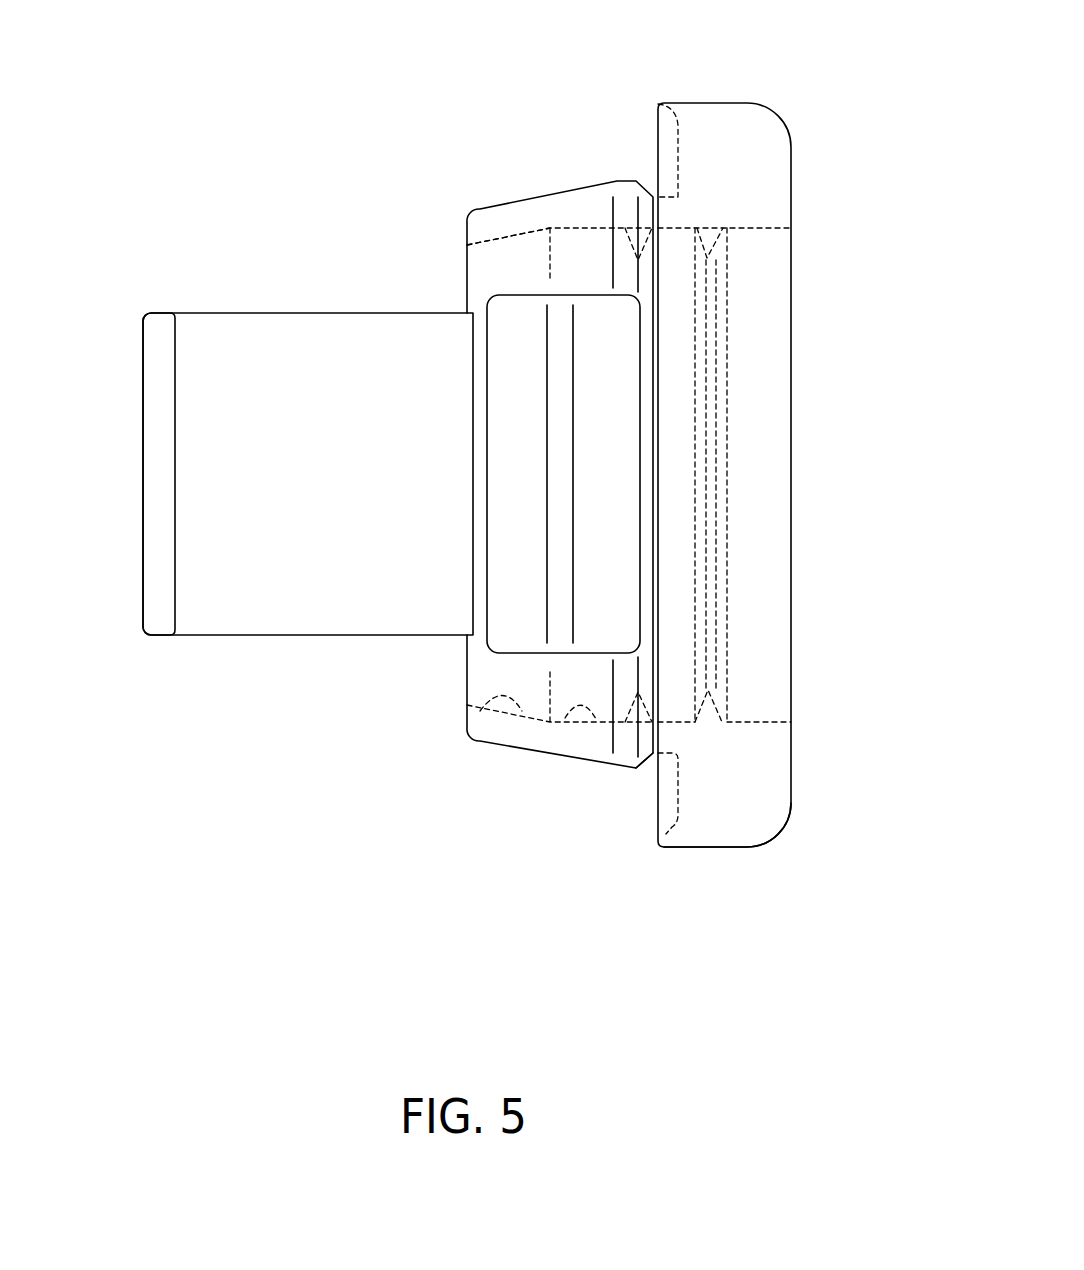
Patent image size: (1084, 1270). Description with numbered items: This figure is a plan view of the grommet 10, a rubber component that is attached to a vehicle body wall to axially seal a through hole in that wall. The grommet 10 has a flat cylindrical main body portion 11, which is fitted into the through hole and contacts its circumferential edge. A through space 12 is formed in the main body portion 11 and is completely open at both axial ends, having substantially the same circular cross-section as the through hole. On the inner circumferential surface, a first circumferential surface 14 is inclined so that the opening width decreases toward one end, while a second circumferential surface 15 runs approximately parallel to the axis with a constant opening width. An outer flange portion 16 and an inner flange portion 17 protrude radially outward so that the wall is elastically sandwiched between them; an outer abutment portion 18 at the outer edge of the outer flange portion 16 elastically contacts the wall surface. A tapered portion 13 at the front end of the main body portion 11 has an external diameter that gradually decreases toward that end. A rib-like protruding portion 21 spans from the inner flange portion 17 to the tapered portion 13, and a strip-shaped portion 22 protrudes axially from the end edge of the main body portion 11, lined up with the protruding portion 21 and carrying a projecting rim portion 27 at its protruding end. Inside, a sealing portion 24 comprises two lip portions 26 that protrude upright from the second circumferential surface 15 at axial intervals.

The grommet 10 is at (329, 133).
The main body portion 11 is at (577, 248).
The through space 12 is at (760, 362).
The tapered portion 13 is at (517, 243).
The first circumferential surface 14 is at (480, 711).
The second circumferential surface 15 is at (565, 718).
The outer flange portion 16 is at (767, 822).
The inner flange portion 17 is at (628, 768).
The outer abutment portion 18 is at (667, 837).
The protruding portion 21 is at (503, 480).
The strip-shaped portion 22 is at (262, 577).
The sealing portion 24 is at (669, 210).
The lip portion 26 is at (640, 705).
The projecting rim portion 27 is at (150, 557).